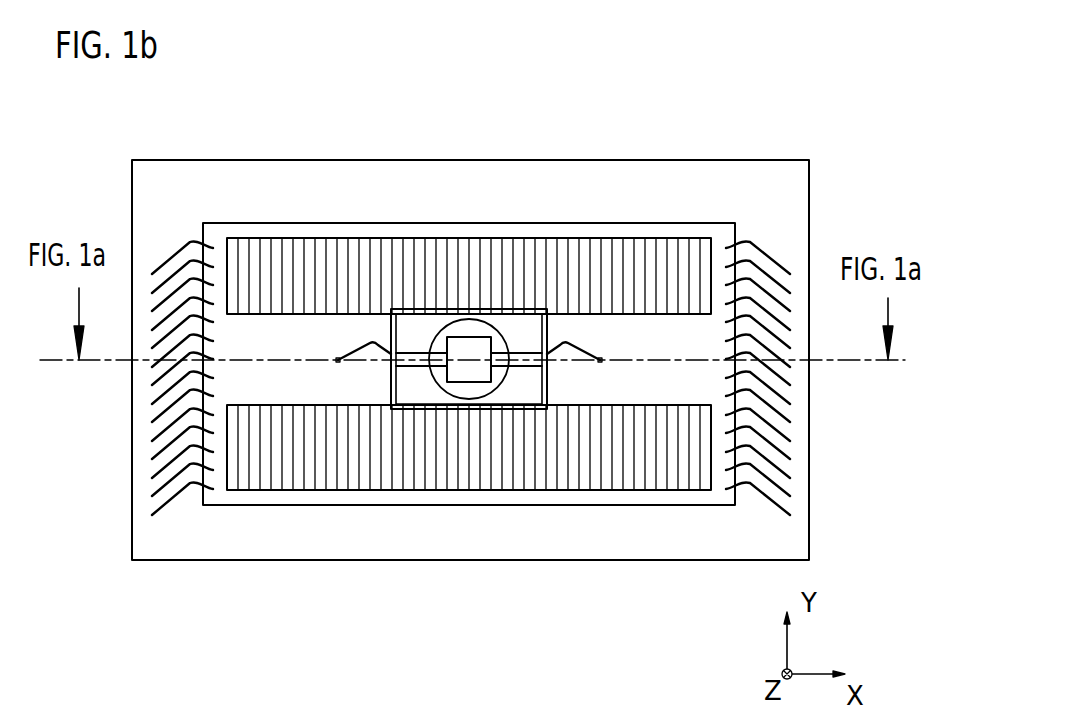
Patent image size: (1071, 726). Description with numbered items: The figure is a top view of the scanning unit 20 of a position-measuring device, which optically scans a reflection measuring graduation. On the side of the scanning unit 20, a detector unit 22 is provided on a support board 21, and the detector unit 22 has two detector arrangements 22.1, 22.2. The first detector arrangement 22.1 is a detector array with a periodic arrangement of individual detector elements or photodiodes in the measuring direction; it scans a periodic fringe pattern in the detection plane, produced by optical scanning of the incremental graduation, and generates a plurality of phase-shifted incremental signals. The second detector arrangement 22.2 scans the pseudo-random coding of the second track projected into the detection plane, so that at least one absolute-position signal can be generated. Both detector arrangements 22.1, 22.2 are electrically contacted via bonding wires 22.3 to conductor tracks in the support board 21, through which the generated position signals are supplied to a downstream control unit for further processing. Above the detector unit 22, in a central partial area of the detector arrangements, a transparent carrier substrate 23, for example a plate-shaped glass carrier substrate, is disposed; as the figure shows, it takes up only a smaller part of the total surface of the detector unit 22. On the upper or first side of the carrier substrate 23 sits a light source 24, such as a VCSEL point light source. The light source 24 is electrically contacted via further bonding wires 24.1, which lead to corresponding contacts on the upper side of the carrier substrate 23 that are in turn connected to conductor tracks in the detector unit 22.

The scanning unit 20 is at (115, 547).
The support board 21 is at (668, 534).
The detector unit 22 is at (240, 230).
The first detector arrangement 22.1 is at (342, 262).
The second detector arrangement 22.2 is at (300, 470).
The bonding wires 22.3 is at (762, 246).
The carrier substrate 23 is at (538, 316).
The light source 24 is at (463, 348).
The further bonding wires 24.1 is at (580, 352).